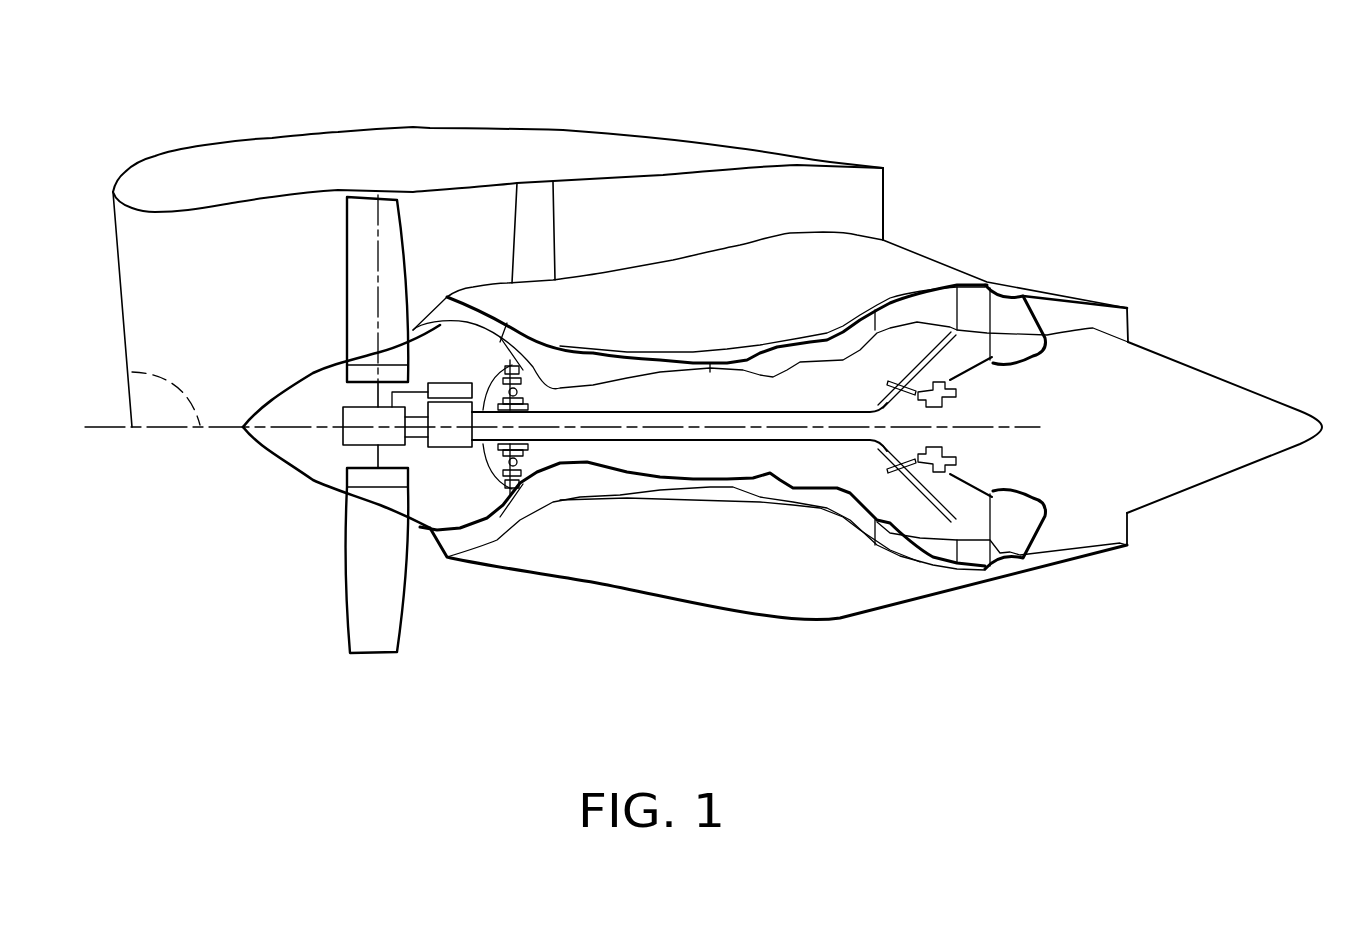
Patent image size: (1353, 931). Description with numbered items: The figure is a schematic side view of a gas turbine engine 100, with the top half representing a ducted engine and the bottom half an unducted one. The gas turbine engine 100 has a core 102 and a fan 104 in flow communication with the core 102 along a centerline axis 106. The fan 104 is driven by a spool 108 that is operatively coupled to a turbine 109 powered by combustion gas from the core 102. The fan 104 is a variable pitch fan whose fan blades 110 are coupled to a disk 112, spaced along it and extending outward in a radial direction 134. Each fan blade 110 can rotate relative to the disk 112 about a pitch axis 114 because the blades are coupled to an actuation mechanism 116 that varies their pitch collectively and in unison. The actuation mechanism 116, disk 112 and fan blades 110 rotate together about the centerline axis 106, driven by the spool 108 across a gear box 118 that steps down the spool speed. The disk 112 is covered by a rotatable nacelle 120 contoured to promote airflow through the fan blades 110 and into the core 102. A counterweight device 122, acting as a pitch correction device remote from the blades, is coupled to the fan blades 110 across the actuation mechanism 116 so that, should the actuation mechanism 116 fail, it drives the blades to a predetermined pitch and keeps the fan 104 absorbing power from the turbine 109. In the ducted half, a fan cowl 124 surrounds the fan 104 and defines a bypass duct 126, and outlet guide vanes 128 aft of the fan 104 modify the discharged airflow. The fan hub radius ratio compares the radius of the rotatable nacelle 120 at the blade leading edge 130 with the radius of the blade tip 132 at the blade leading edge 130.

The gas turbine engine 100 is at (195, 132).
The core 102 is at (766, 345).
The fan 104 is at (312, 295).
The centerline axis 106 is at (138, 393).
The spool 108 is at (518, 368).
The turbine 109 is at (992, 264).
The fan blades 110 is at (356, 273).
The disk 112 is at (356, 378).
The pitch axis 114 is at (345, 193).
The actuation mechanism 116 is at (343, 432).
The gear box 118 is at (448, 434).
The rotatable nacelle 120 is at (282, 392).
The counterweight device 122 is at (453, 392).
The fan cowl 124 is at (460, 128).
The bypass duct 126 is at (200, 305).
The outlet guide vanes 128 is at (555, 213).
The blade leading edge 130 is at (347, 232).
The blade tip 132 is at (347, 200).
The radial direction 134 is at (1313, 365).